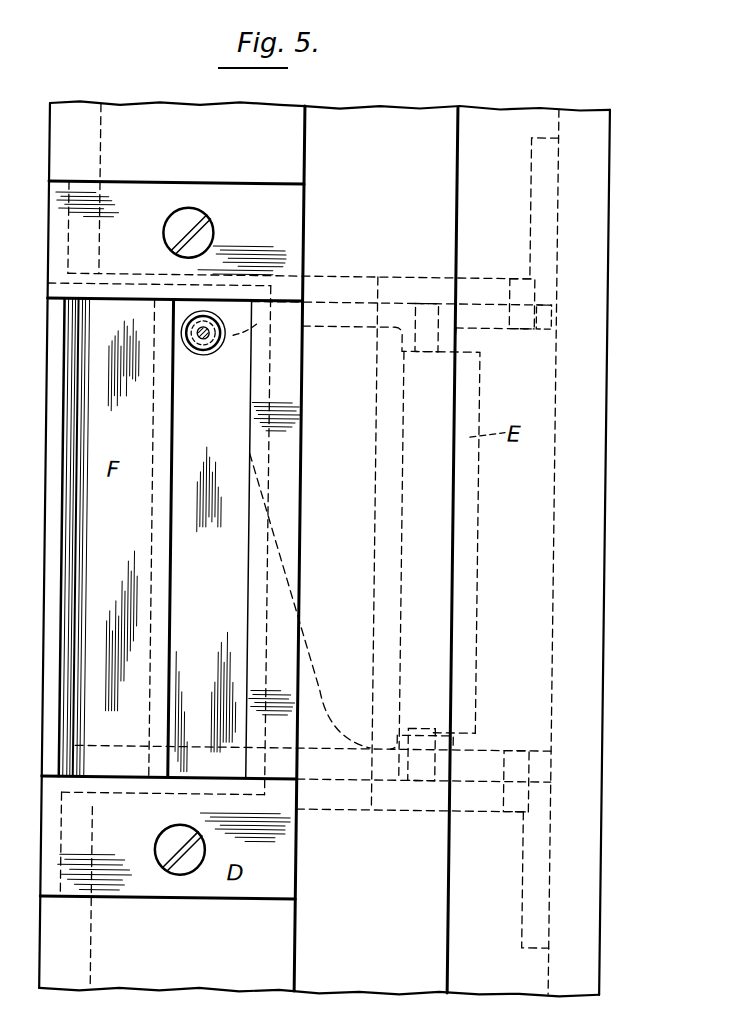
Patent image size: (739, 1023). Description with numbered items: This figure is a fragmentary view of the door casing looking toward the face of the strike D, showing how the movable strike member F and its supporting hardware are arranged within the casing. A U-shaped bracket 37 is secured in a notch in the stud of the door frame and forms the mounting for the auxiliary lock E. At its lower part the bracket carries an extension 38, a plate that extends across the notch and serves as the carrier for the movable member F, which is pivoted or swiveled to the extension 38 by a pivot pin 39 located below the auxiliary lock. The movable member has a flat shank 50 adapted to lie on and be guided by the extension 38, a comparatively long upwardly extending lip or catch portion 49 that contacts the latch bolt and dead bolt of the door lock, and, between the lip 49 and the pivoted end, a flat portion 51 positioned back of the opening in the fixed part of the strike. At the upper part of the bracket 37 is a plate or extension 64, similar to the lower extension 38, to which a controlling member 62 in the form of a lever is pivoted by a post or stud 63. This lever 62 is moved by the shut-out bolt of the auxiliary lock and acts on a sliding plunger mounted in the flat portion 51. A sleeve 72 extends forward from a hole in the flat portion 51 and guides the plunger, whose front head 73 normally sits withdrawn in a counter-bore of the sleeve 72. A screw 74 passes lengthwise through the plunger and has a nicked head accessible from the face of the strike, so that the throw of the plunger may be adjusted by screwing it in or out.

The U-shaped bracket 37 is at (541, 186).
The extension 38 is at (316, 795).
The pivot pin 39 is at (536, 746).
The lip or catch portion 49 is at (165, 519).
The flat shank 50 is at (361, 768).
The flat portion 51 is at (210, 539).
The controlling member 62 is at (278, 315).
The post or stud 63 is at (552, 301).
The plate or extension 64 is at (314, 280).
The sleeve 72 is at (222, 350).
The head 73 is at (193, 350).
The screw 74 is at (210, 329).